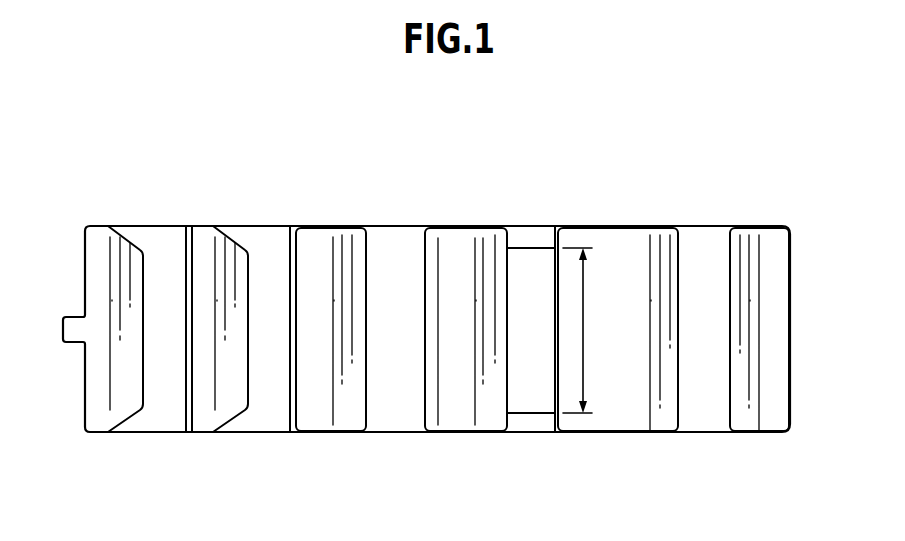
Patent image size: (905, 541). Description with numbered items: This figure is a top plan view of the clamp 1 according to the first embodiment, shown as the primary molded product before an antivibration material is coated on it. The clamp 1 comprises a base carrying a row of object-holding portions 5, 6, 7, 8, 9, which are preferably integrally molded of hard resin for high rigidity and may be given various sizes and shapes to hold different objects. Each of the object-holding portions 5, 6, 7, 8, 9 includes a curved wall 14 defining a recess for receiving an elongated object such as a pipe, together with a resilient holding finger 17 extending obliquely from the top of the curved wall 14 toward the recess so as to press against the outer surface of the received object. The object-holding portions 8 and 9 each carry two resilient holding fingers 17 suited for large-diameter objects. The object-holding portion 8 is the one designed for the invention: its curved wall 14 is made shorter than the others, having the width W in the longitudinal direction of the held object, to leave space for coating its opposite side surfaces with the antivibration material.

The clamp 1 is at (800, 313).
The object-holding portion 5 is at (158, 226).
The object-holding portion 6 is at (275, 226).
The object-holding portion 7 is at (400, 226).
The object-holding portion 8 is at (533, 226).
The object-holding portion 9 is at (700, 226).
The curved wall 14 is at (516, 386).
The resilient holding finger 17 is at (96, 256).